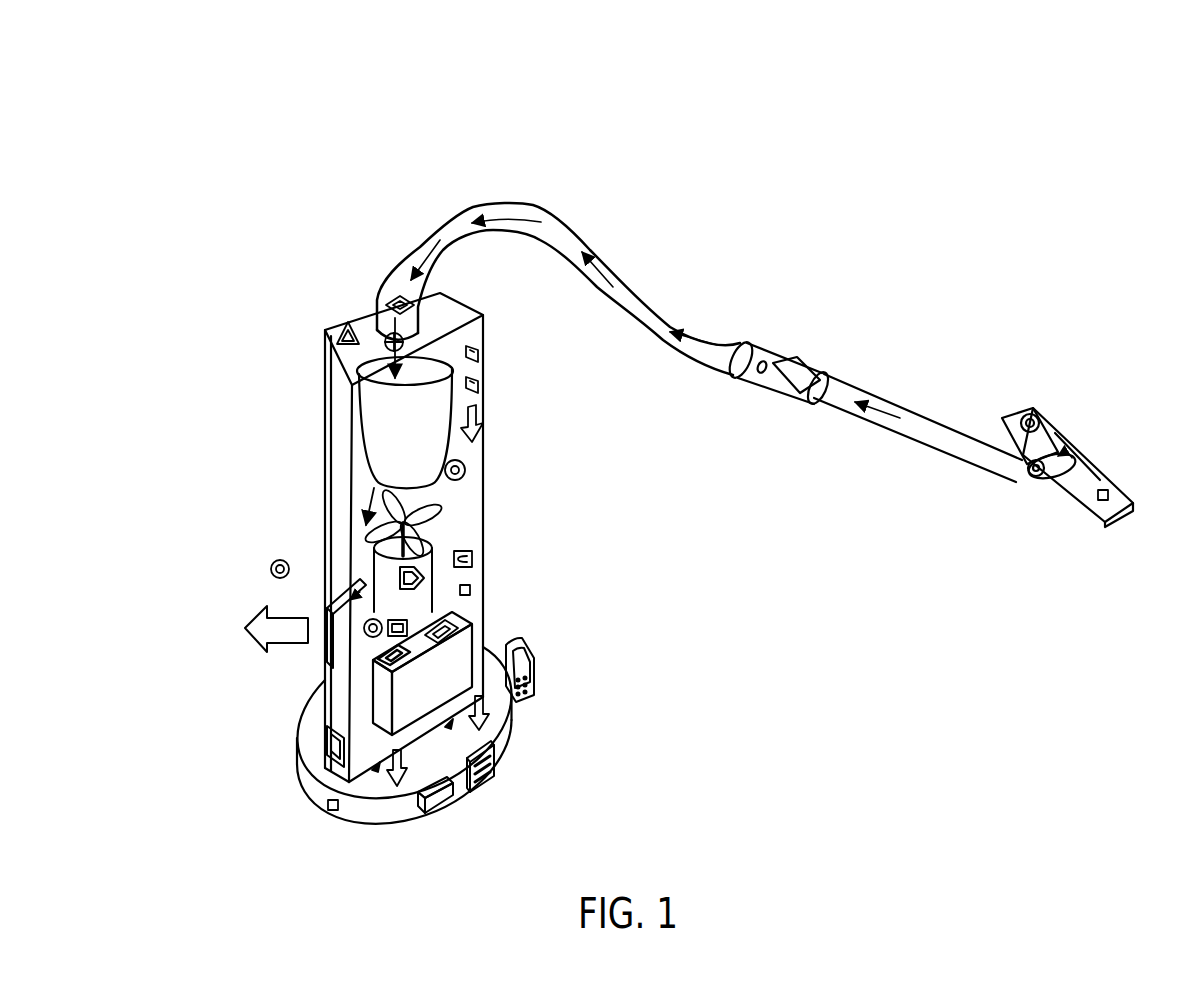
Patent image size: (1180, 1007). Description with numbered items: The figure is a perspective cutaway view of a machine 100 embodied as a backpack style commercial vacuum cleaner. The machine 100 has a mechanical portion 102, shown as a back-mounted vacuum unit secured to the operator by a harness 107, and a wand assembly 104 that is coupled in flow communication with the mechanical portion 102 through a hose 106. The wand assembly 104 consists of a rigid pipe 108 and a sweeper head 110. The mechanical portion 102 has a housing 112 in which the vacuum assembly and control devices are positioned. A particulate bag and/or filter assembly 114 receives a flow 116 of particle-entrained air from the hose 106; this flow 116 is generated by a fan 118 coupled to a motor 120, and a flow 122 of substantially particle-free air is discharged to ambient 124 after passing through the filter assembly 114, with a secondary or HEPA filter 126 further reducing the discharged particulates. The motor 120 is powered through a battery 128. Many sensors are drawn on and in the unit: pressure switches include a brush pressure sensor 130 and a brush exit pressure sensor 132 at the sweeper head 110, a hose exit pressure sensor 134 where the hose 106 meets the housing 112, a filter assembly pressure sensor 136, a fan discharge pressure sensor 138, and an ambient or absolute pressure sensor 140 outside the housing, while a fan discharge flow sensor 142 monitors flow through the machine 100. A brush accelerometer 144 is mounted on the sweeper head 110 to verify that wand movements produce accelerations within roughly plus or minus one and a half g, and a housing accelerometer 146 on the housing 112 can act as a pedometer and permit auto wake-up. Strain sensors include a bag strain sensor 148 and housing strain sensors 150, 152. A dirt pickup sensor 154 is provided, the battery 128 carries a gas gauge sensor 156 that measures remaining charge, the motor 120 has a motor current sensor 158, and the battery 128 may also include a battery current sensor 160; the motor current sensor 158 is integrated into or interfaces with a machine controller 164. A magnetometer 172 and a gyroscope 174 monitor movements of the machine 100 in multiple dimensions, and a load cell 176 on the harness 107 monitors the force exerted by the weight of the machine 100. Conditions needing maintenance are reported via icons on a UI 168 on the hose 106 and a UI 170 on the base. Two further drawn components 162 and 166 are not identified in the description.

The machine 100 is at (632, 98).
The mechanical portion 102 is at (282, 202).
The wand assembly 104 is at (970, 263).
The hose 106 is at (604, 236).
The harness 107 is at (385, 815).
The rigid pipe 108 is at (900, 398).
The sweeper head 110 is at (1078, 438).
The housing 112 is at (487, 337).
The particulate bag and/or filter assembly 114 is at (423, 434).
The flow of particle-entrained air 116 is at (365, 377).
The fan 118 is at (447, 507).
The motor 120 is at (425, 592).
The flow of substantially particle-free air 122 is at (247, 626).
The ambient 124 is at (163, 679).
The secondary or HEPA filter 126 is at (335, 600).
The battery 128 is at (446, 694).
The brush pressure sensor 130 is at (1030, 414).
The brush exit pressure sensor 132 is at (1037, 478).
The hose exit pressure sensor 134 is at (390, 336).
The filter assembly pressure sensor 136 is at (467, 470).
The fan discharge pressure sensor 138 is at (364, 636).
The ambient or absolute pressure sensor 140 is at (278, 554).
The fan discharge flow sensor 142 is at (392, 637).
The brush accelerometer 144 is at (1110, 490).
The housing accelerometer 146 is at (471, 590).
The bag strain sensor 148 is at (484, 425).
The housing strain sensor 150 is at (482, 718).
The housing strain sensor 152 is at (453, 795).
The dirt pickup sensor 154 is at (388, 300).
The gas gauge sensor 156 is at (384, 660).
The motor current sensor 158 is at (438, 550).
The battery current sensor 160 is at (452, 628).
The indicator 162 is at (344, 332).
The machine controller 164 is at (473, 559).
The port 166 is at (328, 745).
The UI 168 is at (795, 348).
The UI 170 is at (535, 666).
The magnetometer 172 is at (480, 355).
The gyroscope 174 is at (480, 386).
The load cell 176 is at (334, 811).